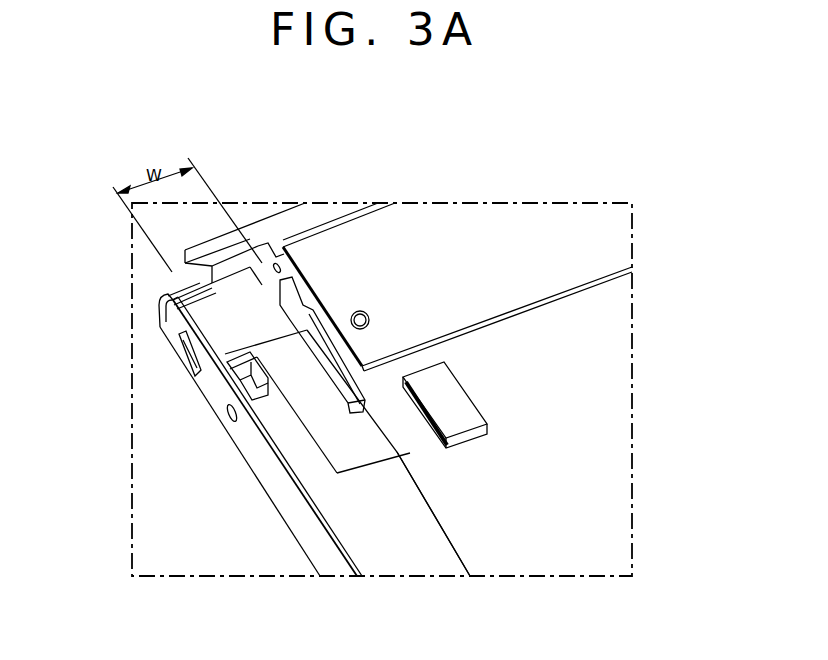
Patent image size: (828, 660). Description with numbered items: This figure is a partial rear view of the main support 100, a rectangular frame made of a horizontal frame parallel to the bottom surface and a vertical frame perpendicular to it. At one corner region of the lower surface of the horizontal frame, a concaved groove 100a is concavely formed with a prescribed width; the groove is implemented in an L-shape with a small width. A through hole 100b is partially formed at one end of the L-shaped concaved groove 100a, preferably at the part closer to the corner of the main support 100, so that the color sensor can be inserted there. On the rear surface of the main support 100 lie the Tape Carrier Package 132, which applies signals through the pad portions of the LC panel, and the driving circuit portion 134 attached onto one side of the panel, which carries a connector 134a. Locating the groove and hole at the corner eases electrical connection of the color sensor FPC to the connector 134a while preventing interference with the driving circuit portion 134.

The main support 100 is at (357, 517).
The concaved groove 100a is at (323, 428).
The through hole 100b is at (200, 273).
The Tape Carrier Package 132 is at (421, 252).
The driving circuit portion 134 is at (563, 341).
The connector 134a is at (463, 402).